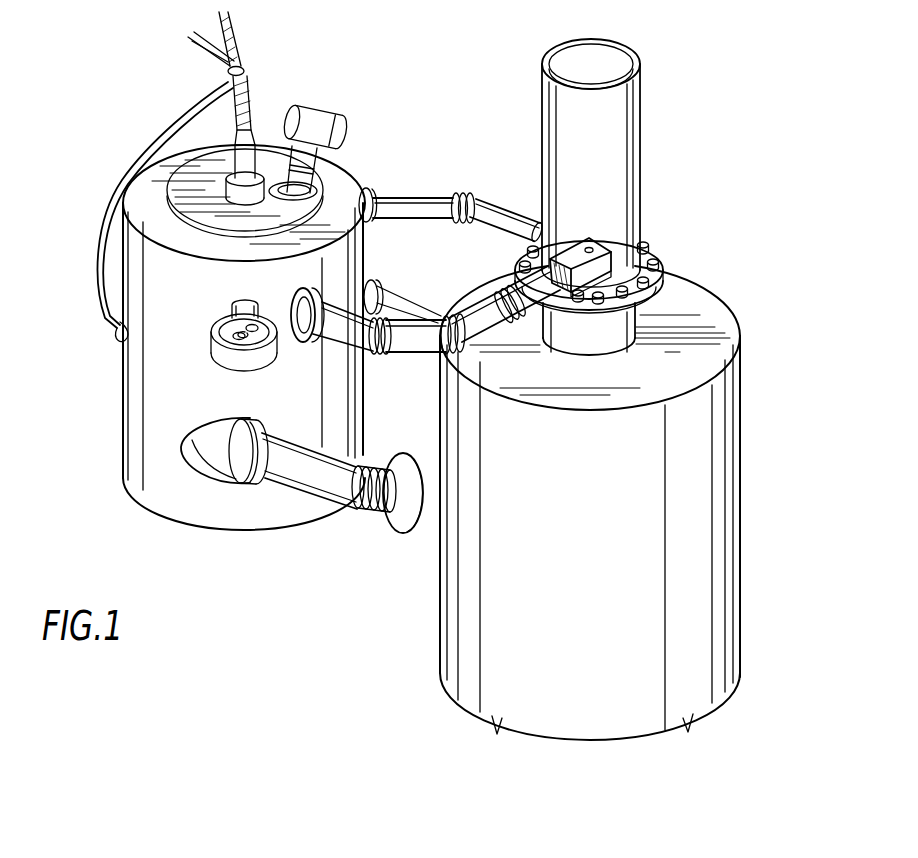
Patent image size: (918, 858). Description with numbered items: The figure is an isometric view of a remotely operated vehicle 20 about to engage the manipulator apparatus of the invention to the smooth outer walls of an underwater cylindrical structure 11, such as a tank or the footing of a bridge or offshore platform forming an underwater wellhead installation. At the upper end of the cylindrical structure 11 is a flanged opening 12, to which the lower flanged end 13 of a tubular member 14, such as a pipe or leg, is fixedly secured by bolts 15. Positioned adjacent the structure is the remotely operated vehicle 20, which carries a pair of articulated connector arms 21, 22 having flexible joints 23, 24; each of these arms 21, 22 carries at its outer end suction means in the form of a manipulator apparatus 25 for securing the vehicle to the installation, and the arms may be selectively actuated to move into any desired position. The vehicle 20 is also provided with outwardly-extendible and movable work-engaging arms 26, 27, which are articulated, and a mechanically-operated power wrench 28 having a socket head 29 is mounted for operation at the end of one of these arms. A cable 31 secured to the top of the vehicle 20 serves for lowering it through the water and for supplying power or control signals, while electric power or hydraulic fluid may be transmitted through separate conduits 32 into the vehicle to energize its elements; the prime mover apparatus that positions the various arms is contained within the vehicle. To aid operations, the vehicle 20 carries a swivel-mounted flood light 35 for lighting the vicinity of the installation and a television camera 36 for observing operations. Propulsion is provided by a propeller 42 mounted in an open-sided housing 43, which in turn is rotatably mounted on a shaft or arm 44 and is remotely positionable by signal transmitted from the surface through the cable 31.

The cylindrical structure 11 is at (735, 494).
The flanged opening 12 is at (640, 322).
The lower flanged end 13 is at (652, 245).
The tubular member 14 is at (640, 130).
The bolts 15 is at (662, 262).
The remotely operated vehicle 20 is at (112, 430).
The articulated arm 21 is at (300, 518).
The articulated arm 22 is at (423, 303).
The flexible joint 23 is at (377, 506).
The flexible joint 24 is at (370, 282).
The manipulator apparatus 25 is at (405, 537).
The work-engaging arm 26 is at (490, 332).
The work-engaging arm 27 is at (418, 196).
The power wrench 28 is at (578, 240).
The socket head 29 is at (605, 278).
The cable 31 is at (247, 83).
The conduits 32 is at (190, 112).
The flood lights 35 is at (304, 135).
The television cameras 36 is at (337, 115).
The propellers 42 is at (214, 328).
The open-sided housing 43 is at (222, 357).
The shaft or arm 44 is at (236, 304).